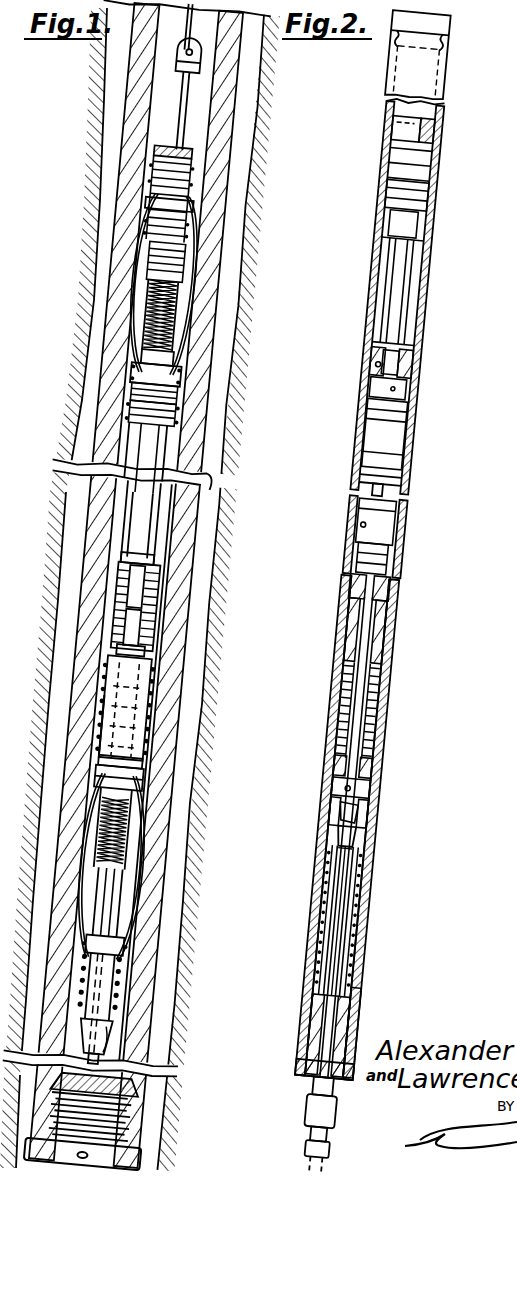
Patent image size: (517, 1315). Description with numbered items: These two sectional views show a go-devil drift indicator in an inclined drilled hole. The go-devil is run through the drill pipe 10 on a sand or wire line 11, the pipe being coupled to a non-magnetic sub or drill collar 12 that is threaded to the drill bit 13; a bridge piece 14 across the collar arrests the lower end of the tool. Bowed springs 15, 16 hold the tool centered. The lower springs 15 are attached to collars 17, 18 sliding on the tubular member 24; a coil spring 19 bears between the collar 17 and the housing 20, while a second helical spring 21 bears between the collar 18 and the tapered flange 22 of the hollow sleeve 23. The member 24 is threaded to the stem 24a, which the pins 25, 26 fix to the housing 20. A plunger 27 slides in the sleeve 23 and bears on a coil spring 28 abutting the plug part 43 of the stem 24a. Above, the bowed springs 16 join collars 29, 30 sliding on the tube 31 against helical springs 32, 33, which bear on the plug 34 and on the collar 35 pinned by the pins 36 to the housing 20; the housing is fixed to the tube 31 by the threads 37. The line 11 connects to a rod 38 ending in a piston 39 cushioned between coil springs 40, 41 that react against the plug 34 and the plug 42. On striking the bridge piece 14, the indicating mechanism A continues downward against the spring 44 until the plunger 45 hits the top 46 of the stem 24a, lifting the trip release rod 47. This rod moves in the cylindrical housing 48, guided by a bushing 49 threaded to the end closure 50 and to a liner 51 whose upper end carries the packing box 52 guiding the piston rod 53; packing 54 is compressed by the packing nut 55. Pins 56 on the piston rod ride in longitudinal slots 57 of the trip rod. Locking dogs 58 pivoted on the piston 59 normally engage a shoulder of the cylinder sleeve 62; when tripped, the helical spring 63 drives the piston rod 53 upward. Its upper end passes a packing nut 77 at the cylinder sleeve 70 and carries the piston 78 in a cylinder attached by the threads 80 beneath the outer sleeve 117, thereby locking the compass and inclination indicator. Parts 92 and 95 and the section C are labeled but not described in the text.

In FIG. 1, the drill pipe 10 is at (232, 110).
In FIG. 1, the sand or wire line 11 is at (193, 10).
In FIG. 1, the non-magnetic sub or drill collar 12 is at (193, 533).
In FIG. 1, the drill bit 13 is at (136, 1157).
In FIG. 1, the bridge piece 14 is at (113, 1085).
In FIG. 1, the lower bowed springs 15 is at (149, 793).
In FIG. 1, the upper bowed springs 16 is at (200, 233).
In FIG. 1, the upper collar 17 is at (151, 739).
In FIG. 1, the lower collar 18 is at (126, 943).
In FIG. 1, the coil spring 19 is at (149, 698).
In FIG. 1, the housing 20 is at (156, 562).
In FIG. 1, the second helical spring 21 is at (101, 1009).
In FIG. 1, the tapered flange 22 is at (108, 1045).
In FIG. 1, the hollow sleeve 23 is at (119, 976).
In FIG. 1, the tubular member 24 is at (124, 883).
In FIG. 1, the stem 24a is at (146, 722).
In FIG. 1, the pin 25 is at (153, 668).
In FIG. 1, the pin 26 is at (151, 681).
In FIG. 1, the plunger 27 is at (103, 1018).
In FIG. 1, the coil spring 28 is at (131, 819).
In FIG. 1, the collar 29 is at (201, 207).
In FIG. 1, the collar 30 is at (220, 382).
In FIG. 1, the tube 31 is at (201, 270).
In FIG. 1, the upper helical spring 32 is at (196, 181).
In FIG. 1, the helical spring 33 is at (183, 418).
In FIG. 1, the plug 34 is at (178, 143).
In FIG. 1, the collar 35 is at (172, 452).
In FIG. 1, the pins 36 is at (178, 436).
In FIG. 1, the cooperating threads 37 is at (185, 402).
In FIG. 1, the rod 38 is at (181, 114).
In FIG. 1, the piston 39 is at (191, 288).
In FIG. 1, the coil spring 40 is at (186, 250).
In FIG. 1, the coil spring 41 is at (193, 329).
In FIG. 1, the plug 42 is at (196, 359).
In FIG. 1, the plug part 43 is at (153, 762).
In FIG. 1, the spring 44 is at (161, 592).
In FIG. 1, the plunger 45 is at (151, 615).
In FIG. 1, the top 46 is at (151, 653).
In FIG. 1, the trip release rod 47 is at (161, 576).
In FIG. 2, the trip release rod 47 is at (366, 857).
In FIG. 2, the cylindrical housing 48 is at (406, 526).
In FIG. 2, the bushing 49 is at (351, 1024).
In FIG. 2, the end closure 50 is at (304, 1071).
In FIG. 2, the liner 51 is at (349, 940).
In FIG. 2, the packing box 52 is at (397, 613).
In FIG. 2, the piston rod 53 is at (405, 356).
In FIG. 2, the packing 54 is at (393, 629).
In FIG. 2, the packing nut 55 is at (387, 668).
In FIG. 2, the pins 56 is at (326, 917).
In FIG. 2, the longitudinal slots 57 is at (353, 889).
In FIG. 2, the locking dogs 58 is at (371, 810).
In FIG. 2, the piston 59 is at (377, 773).
In FIG. 2, the cylinder sleeve 62 is at (389, 701).
In FIG. 2, the helical spring 63 is at (349, 915).
In FIG. 2, the cylinder sleeve 70 is at (409, 507).
In FIG. 2, the packing nut 77 is at (411, 392).
In FIG. 2, the piston 78 is at (417, 357).
In FIG. 2, the threads 80 is at (406, 419).
In FIG. 2, the inner tube 92 is at (419, 262).
In FIG. 2, the upper element 95 is at (433, 133).
In FIG. 2, the outer sleeve 117 is at (432, 203).
In FIG. 1, the indicating mechanism A is at (226, 509).
In FIG. 2, the section C is at (386, 745).